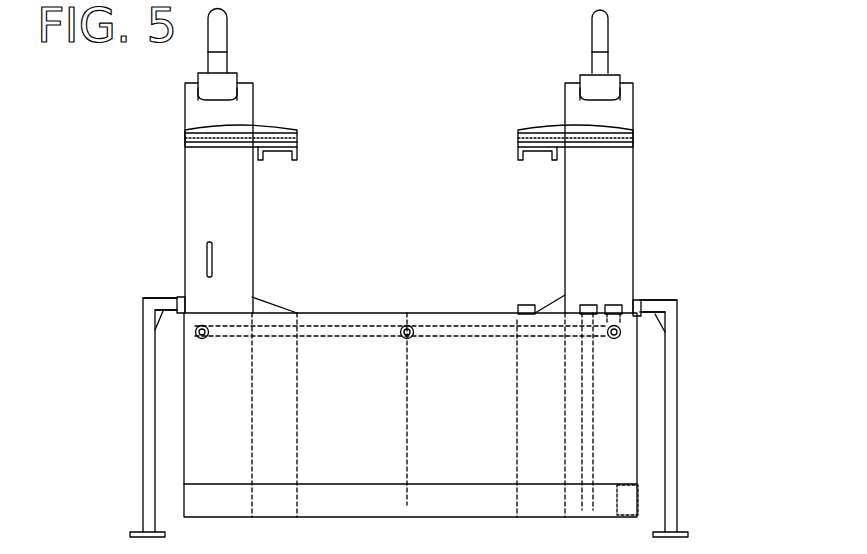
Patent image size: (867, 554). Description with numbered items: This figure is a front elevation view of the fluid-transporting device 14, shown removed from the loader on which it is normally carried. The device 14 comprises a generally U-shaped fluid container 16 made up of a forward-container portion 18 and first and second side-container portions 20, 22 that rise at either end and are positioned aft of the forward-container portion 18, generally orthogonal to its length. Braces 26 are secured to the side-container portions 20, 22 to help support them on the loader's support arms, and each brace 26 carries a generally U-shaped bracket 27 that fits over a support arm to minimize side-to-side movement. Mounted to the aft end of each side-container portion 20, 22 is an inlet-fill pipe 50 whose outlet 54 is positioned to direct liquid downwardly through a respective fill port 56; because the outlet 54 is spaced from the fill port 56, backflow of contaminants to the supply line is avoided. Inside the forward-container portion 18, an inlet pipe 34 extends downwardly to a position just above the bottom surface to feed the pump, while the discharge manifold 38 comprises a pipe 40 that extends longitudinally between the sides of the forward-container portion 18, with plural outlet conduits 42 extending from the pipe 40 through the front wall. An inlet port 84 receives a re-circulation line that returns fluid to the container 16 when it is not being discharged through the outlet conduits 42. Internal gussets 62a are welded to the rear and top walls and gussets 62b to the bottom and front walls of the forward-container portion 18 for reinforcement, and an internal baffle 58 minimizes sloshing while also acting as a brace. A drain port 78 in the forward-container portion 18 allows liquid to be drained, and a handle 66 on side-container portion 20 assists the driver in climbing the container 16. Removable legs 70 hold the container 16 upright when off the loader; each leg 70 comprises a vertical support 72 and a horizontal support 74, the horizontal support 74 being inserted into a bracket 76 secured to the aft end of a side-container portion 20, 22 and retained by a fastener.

The fluid-transporting device 14 is at (730, 140).
The fluid container 16 is at (633, 203).
The forward-container portion 18 is at (433, 457).
The first side-container portion 20 is at (227, 217).
The second side-container portion 22 is at (575, 198).
The brace 26 is at (260, 130).
The U-shaped bracket 27 is at (297, 152).
The inlet pipe 34 is at (580, 398).
The discharge manifold 38 is at (618, 305).
The pipe 40 is at (340, 313).
The outlet conduit 42 is at (202, 339).
The inlet-fill pipe 50 is at (222, 62).
The outlet 54 is at (218, 43).
The fill port 56 is at (217, 90).
The internal baffle 58 is at (408, 410).
The internal gusset 62a is at (297, 352).
The internal gusset 62b is at (297, 477).
The handle 66 is at (212, 262).
The removable leg 70 is at (143, 423).
The vertical support 72 is at (143, 365).
The horizontal support 74 is at (173, 300).
The bracket 76 is at (177, 298).
The drain port 78 is at (638, 505).
The inlet port 84 is at (527, 305).